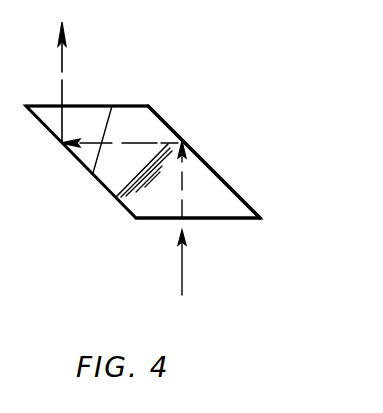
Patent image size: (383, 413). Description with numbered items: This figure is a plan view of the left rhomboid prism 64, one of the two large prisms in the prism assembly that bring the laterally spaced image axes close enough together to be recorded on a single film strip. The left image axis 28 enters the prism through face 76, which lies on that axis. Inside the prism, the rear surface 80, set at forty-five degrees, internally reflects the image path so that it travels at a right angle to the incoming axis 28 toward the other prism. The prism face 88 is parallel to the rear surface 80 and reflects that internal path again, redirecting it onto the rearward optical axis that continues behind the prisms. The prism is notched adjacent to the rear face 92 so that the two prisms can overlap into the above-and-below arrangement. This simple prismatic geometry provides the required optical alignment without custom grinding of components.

The left rhomboid prism 64 is at (238, 194).
The rear face 92 is at (130, 106).
The rear surface 80 is at (217, 173).
The face 76 is at (243, 219).
The prism face 88 is at (118, 195).
The left image axis 28 is at (182, 270).